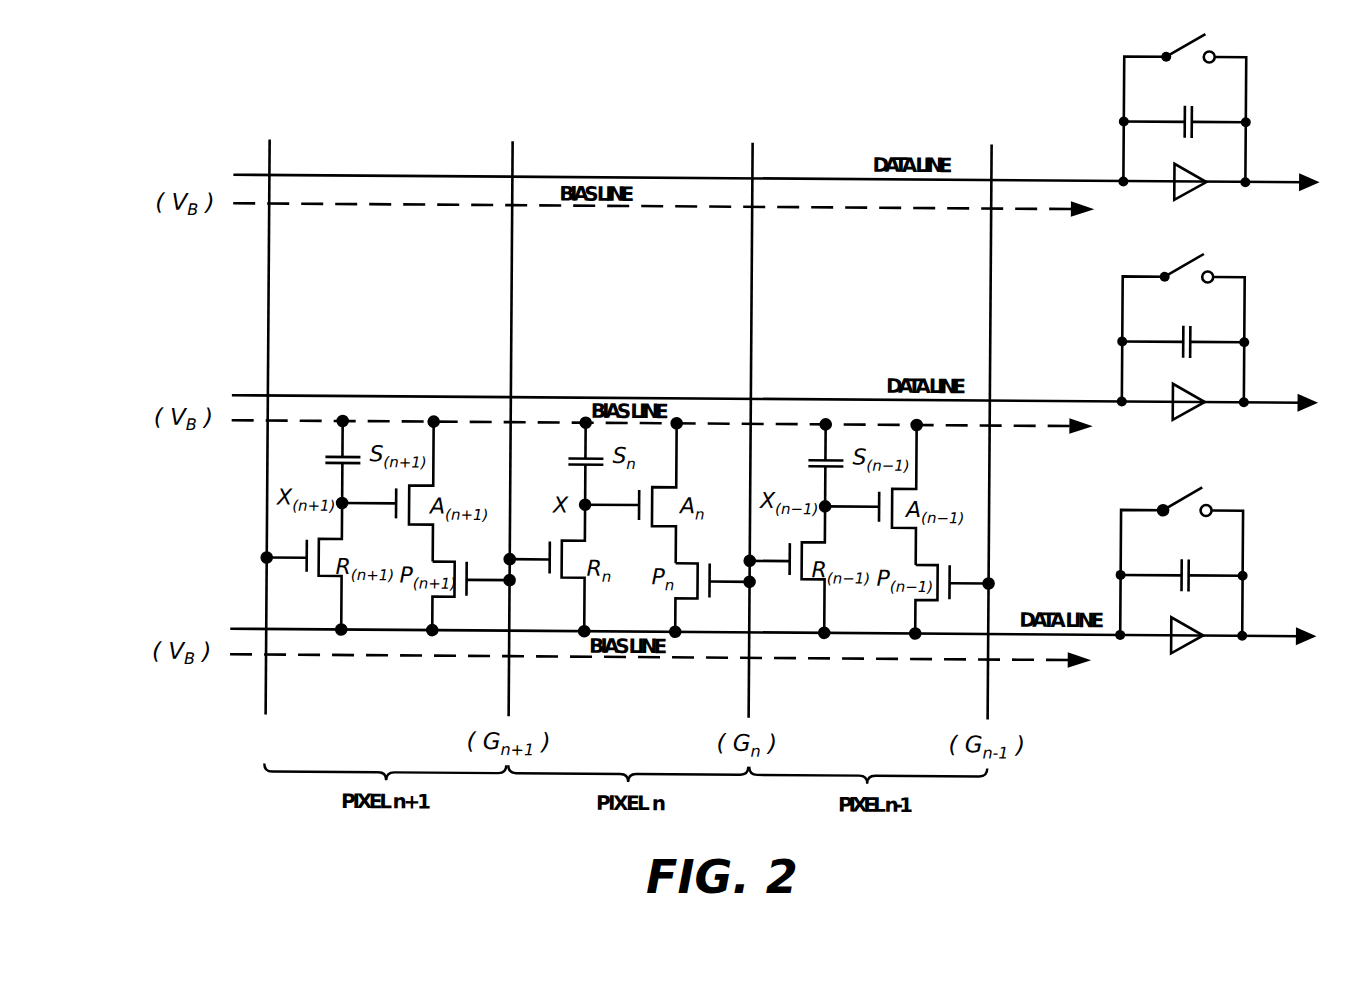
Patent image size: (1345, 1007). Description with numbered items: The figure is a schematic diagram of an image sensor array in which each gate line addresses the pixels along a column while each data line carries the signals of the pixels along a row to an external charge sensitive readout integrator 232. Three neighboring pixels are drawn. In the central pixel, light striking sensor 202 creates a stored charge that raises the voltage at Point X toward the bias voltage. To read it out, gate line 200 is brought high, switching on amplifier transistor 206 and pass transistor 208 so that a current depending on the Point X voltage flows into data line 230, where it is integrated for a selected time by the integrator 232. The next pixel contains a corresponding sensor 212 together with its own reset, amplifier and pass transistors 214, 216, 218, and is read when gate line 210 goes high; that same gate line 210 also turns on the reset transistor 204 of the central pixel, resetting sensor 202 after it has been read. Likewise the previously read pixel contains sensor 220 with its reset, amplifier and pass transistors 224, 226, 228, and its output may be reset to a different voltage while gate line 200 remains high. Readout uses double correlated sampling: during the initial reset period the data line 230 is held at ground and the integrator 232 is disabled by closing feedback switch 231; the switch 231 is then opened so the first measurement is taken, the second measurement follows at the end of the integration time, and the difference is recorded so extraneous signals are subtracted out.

The gate line G_n 200 is at (751, 690).
The sensor S_n 202 is at (580, 455).
The reset transistor R_n 204 is at (567, 582).
The amplifier transistor A_n 206 is at (662, 529).
The pass transistor P_n 208 is at (714, 590).
The gate line G_n+1 210 is at (511, 690).
The sensor S_(n+1) 212 is at (334, 455).
The reset transistor R_n+1 214 is at (322, 580).
The amplifier transistor A_n+1 216 is at (413, 529).
The pass transistor P_n+1 218 is at (472, 590).
The sensor S_n-1 220 is at (990, 690).
The reset transistor R_n-1 224 is at (810, 582).
The amplifier transistor A_n-1 226 is at (892, 529).
The pass transistor P_n-1 228 is at (954, 590).
The data line 230 is at (1274, 631).
The feedback switch 231 is at (1181, 499).
The charge sensitive readout integrator 232 is at (1214, 644).